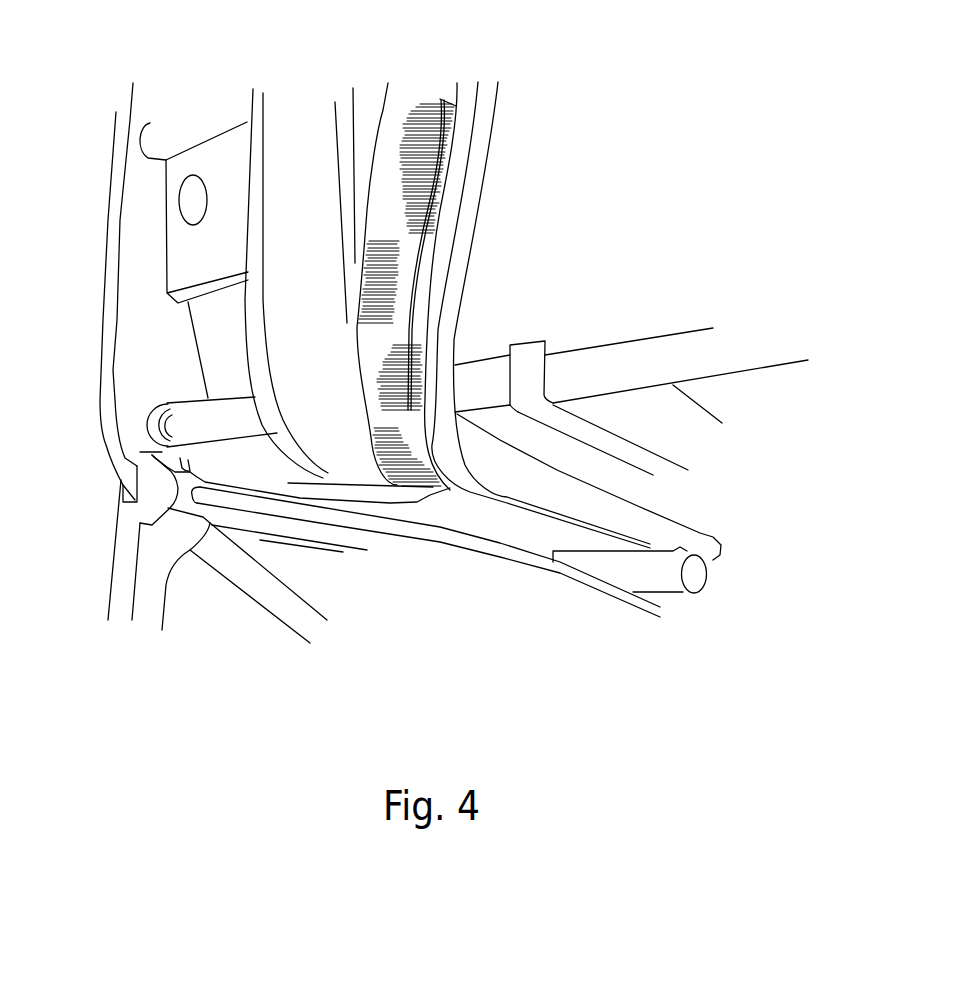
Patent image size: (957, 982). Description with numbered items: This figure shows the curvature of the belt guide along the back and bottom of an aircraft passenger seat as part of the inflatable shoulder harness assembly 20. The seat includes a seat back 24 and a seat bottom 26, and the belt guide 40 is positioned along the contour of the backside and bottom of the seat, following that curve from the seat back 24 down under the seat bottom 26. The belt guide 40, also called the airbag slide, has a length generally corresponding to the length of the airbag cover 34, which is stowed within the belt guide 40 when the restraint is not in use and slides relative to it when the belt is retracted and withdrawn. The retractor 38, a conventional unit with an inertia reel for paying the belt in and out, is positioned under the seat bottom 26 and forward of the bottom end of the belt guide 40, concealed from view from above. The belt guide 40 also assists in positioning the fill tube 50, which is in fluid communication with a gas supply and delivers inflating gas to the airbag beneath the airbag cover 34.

The inflatable shoulder harness assembly 20 is at (553, 133).
The seat back 24 is at (72, 241).
The seat bottom 26 is at (731, 454).
The airbag cover 34 is at (303, 123).
The retractor 38 is at (672, 578).
The belt guide 40 is at (260, 372).
The fill tube 50 is at (408, 279).